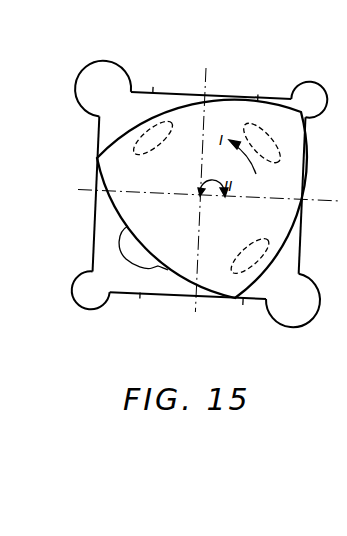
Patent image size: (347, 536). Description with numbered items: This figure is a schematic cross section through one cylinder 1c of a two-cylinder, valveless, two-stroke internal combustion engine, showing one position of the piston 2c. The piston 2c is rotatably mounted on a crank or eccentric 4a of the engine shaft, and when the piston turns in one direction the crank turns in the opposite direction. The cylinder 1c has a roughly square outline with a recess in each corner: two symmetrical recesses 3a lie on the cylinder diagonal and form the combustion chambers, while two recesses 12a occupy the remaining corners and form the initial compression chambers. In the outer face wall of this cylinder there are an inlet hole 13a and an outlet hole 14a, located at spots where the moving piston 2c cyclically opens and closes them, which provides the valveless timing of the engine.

The cylinder 1c is at (304, 163).
The piston 2c is at (278, 213).
The recess 3a is at (307, 88).
The recess 12a is at (123, 52).
The crank or eccentric 4a is at (203, 197).
The inlet hole 13a is at (160, 141).
The outlet hole 14a is at (282, 123).